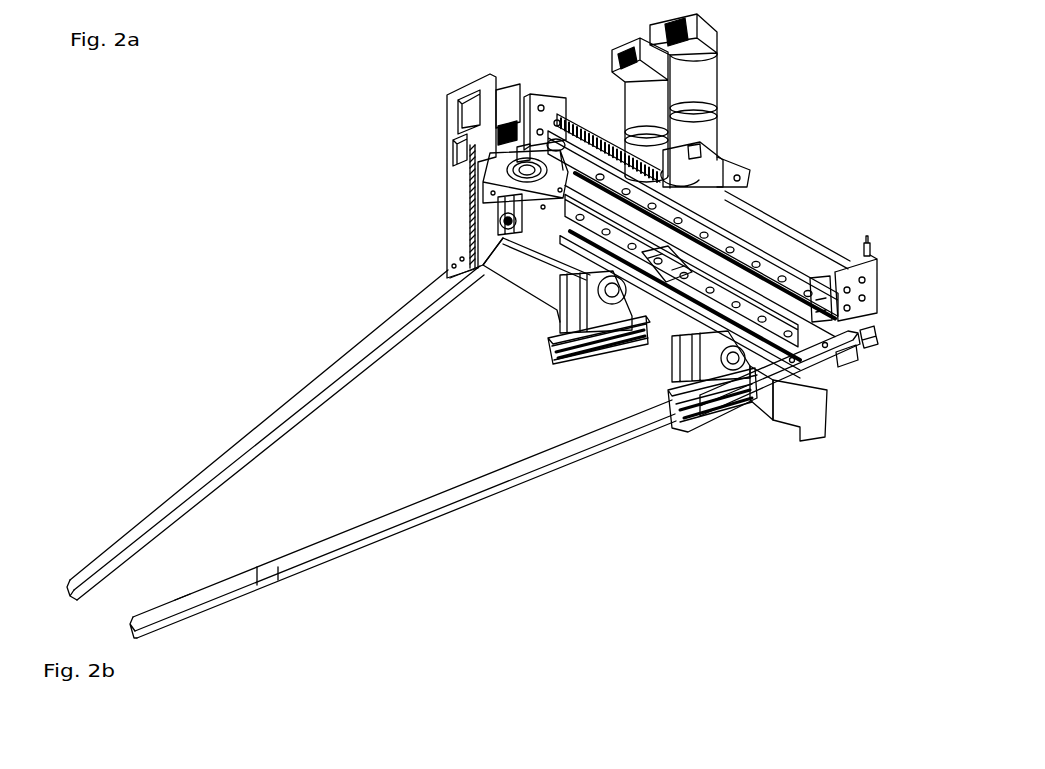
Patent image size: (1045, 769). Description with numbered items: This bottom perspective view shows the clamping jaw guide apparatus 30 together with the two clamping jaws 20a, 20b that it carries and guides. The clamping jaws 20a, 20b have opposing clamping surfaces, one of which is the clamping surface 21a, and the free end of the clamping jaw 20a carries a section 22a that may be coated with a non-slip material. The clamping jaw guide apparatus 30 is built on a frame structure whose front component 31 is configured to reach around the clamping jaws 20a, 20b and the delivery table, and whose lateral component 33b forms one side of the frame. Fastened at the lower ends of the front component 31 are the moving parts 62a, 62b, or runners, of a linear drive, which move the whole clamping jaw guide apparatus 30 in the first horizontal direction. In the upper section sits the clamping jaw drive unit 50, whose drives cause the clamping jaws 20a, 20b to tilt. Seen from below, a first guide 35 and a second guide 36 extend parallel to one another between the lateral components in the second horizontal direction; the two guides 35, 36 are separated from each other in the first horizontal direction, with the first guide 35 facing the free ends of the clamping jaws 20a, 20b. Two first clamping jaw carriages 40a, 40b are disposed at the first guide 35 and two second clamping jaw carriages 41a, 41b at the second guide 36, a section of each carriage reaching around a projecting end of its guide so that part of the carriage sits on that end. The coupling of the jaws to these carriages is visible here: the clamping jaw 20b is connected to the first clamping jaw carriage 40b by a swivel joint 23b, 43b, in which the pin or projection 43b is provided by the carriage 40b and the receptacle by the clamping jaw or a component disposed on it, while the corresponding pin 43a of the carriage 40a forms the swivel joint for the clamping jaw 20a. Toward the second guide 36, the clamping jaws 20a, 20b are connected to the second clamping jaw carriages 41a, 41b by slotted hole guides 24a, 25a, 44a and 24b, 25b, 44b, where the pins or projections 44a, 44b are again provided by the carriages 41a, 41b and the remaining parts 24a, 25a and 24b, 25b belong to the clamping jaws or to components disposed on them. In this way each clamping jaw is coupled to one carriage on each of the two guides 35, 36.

The clamping jaw 20a is at (337, 560).
The clamping jaw 20b is at (93, 567).
The clamping surface 21a is at (278, 572).
The section coated with non-slip material 22a is at (181, 610).
The swivel joint 23b is at (468, 228).
The slotted hole guide 24a is at (868, 345).
The slotted hole guide 24b is at (553, 135).
The slotted hole guide 25a is at (866, 350).
The slotted hole guide 25b is at (520, 150).
The clamping jaw guide apparatus 30 is at (765, 176).
The front component 31 is at (538, 285).
The lateral component 33b is at (478, 78).
The first guide 35 is at (710, 292).
The second guide 36 is at (750, 242).
The first clamping jaw carriage 40a is at (800, 282).
The first clamping jaw carriage 40b is at (498, 197).
The second clamping jaw carriage 41a is at (868, 242).
The second clamping jaw carriage 41b is at (530, 122).
The pin or projection of swivel joint 43a is at (783, 398).
The pin or projection of swivel joint 43b is at (508, 242).
The pin or projection of slotted hole guide 44a is at (850, 360).
The pin or projection of slotted hole guide 44b is at (505, 165).
The clamping jaw drive unit 50 is at (745, 40).
The moving part of linear drive 62a is at (690, 434).
The moving part of linear drive 62b is at (577, 374).